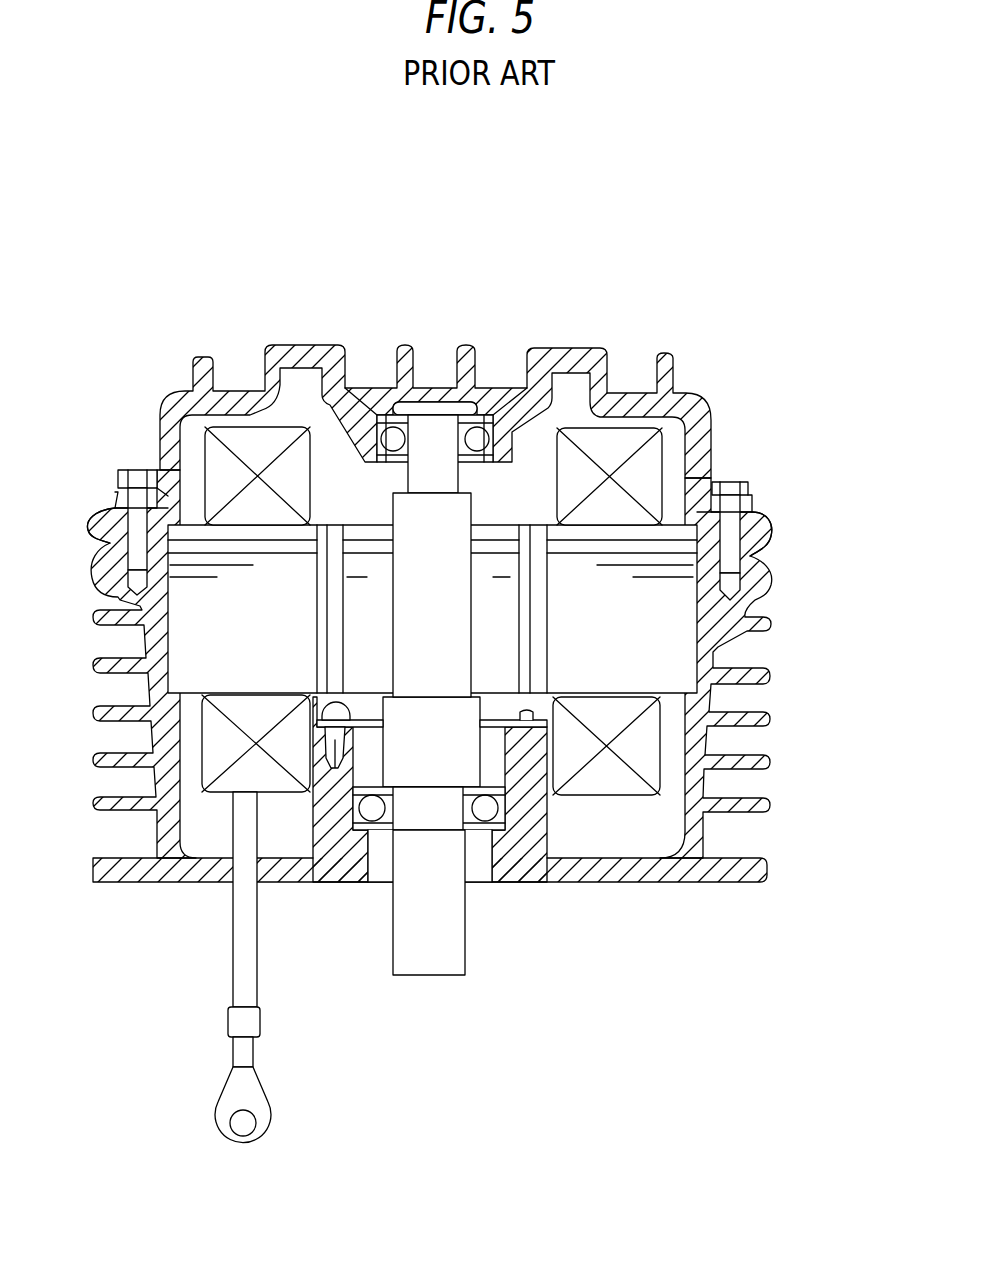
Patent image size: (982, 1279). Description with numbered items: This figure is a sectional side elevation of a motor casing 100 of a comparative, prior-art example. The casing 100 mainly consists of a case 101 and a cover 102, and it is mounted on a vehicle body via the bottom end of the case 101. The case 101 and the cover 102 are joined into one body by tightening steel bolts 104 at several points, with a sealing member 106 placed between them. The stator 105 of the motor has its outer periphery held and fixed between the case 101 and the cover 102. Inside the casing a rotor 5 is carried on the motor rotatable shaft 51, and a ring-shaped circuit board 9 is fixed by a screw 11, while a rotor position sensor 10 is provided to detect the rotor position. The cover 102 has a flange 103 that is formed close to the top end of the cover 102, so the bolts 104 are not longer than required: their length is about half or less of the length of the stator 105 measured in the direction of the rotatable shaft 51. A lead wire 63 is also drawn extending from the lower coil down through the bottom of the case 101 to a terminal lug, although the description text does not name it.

The motor casing 100 is at (697, 313).
The cover 102 is at (566, 345).
The case 101 is at (643, 880).
The flange 103 is at (120, 498).
The steel bolts 104 is at (137, 470).
The stator 105 is at (648, 635).
The sealing member 106 is at (117, 512).
The rotor 5 is at (371, 522).
The ring-shaped circuit board 9 is at (493, 717).
The rotor position sensor 10 is at (531, 745).
The screw 11 is at (334, 768).
The motor rotatable shaft 51 is at (428, 962).
The lead wire 63 is at (244, 927).